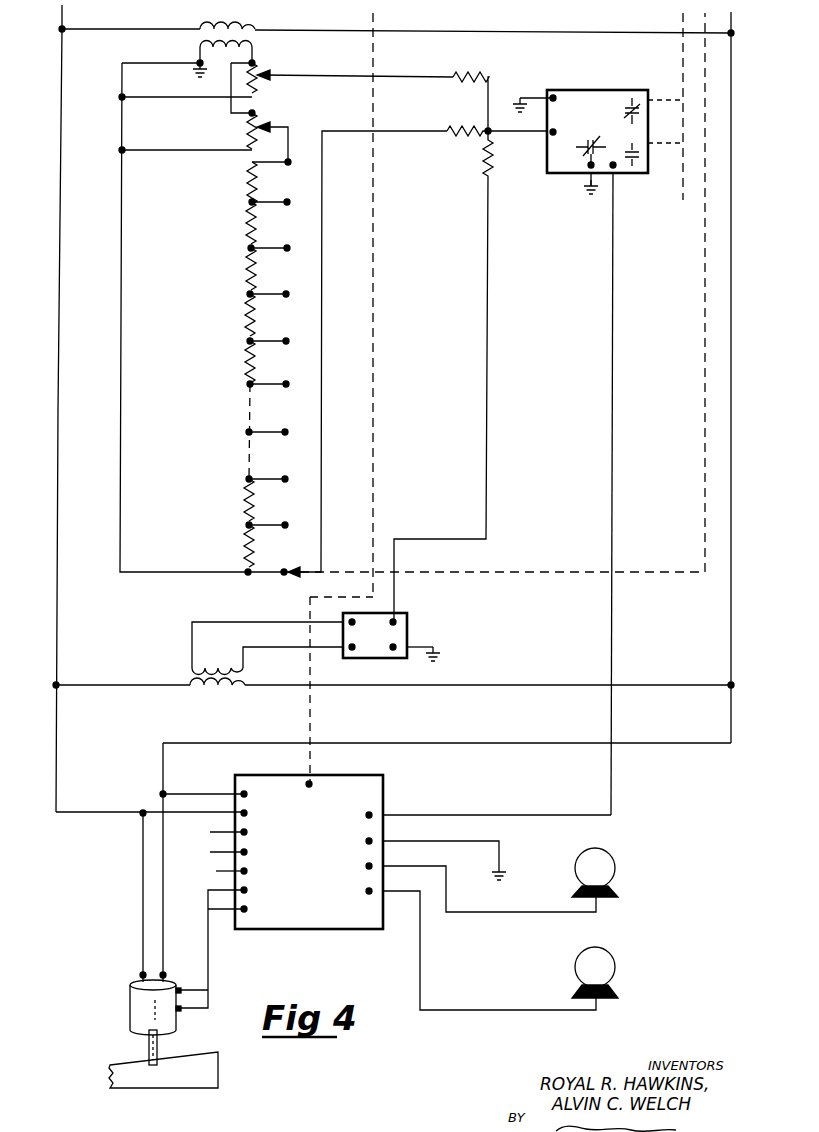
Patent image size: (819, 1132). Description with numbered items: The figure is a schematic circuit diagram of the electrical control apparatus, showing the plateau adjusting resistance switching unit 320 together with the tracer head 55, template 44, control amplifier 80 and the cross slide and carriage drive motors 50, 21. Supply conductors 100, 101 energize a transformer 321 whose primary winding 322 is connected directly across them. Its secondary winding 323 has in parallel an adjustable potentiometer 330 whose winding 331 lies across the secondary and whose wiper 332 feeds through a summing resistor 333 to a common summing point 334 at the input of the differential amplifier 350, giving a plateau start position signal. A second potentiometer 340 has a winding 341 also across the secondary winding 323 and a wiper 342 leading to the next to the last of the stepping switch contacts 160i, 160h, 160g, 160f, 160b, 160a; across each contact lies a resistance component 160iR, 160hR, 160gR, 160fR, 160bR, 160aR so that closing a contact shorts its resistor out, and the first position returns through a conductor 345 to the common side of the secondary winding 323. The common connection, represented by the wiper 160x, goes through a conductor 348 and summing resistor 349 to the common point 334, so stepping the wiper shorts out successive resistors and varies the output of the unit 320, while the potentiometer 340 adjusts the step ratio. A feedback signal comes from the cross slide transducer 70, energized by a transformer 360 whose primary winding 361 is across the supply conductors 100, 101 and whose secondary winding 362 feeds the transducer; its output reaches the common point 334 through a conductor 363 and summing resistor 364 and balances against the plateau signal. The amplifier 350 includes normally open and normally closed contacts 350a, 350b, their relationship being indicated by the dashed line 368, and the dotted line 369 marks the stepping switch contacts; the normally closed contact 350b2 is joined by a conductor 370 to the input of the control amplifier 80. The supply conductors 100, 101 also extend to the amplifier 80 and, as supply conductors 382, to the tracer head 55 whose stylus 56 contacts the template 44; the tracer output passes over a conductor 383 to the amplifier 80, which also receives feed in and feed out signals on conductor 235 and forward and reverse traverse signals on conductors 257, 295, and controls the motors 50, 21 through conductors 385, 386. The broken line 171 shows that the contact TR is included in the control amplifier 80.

The supply conductor 100 is at (60, 27).
The supply conductor 101 is at (735, 30).
The broken line 171 is at (375, 18).
The transformer 321 is at (248, 36).
The primary winding 322 is at (198, 23).
The secondary winding 323 is at (200, 44).
The adjustable potentiometer 330 is at (286, 79).
The potentiometer winding 331 is at (258, 87).
The wiper 332 is at (288, 76).
The summing resistor 333 is at (465, 72).
The common summing point 334 is at (443, 376).
The second potentiometer 340 is at (237, 131).
The potentiometer winding 341 is at (247, 124).
The wiper 342 is at (296, 113).
The conductor 345 is at (122, 180).
The conductor 348 is at (338, 134).
The summing resistor 349 is at (465, 125).
The differential amplifier 350 is at (599, 118).
The normally open contact 350a is at (636, 154).
The normally closed contact 350b is at (629, 92).
The normally closed contact 350b2 is at (580, 158).
The conductor 363 is at (488, 304).
The summing resistor 364 is at (484, 170).
The dashed line 368 is at (683, 55).
The dotted line 369 is at (683, 200).
The circuit conductor 370 is at (611, 270).
The plateau adjusting resistance switching unit 320 is at (412, 308).
The resistance component 160iR is at (244, 222).
The stepping switch contact 160i is at (286, 246).
The resistance component 160hR is at (244, 271).
The stepping switch contact 160h is at (286, 292).
The resistance component 160gR is at (240, 323).
The stepping switch contact 160g is at (286, 339).
The resistance component 160fR is at (238, 360).
The stepping switch contact 160f is at (286, 383).
The resistance component 160bR is at (240, 496).
The stepping switch contact 160b is at (284, 482).
The resistance component 160aR is at (240, 546).
The stepping switch contact 160a is at (284, 528).
The wiper 160x is at (304, 578).
The transformer 360 is at (393, 667).
The primary winding 361 is at (222, 692).
The secondary winding 362 is at (218, 658).
The cross slide transducer 70 is at (383, 643).
The control amplifier 80 is at (312, 858).
The supply conductor 235 is at (212, 832).
The conductor 257 is at (212, 852).
The conductor 295 is at (216, 871).
The supply conductors 382 is at (163, 884).
The conductor 383 is at (210, 965).
The conductor 385 is at (487, 912).
The conductor 386 is at (442, 1011).
The carriage drive motor 21 is at (603, 868).
The cross slide motor 50 is at (614, 960).
The tracer head 55 is at (128, 1004).
The stylus 56 is at (148, 1059).
The template 44 is at (128, 1086).